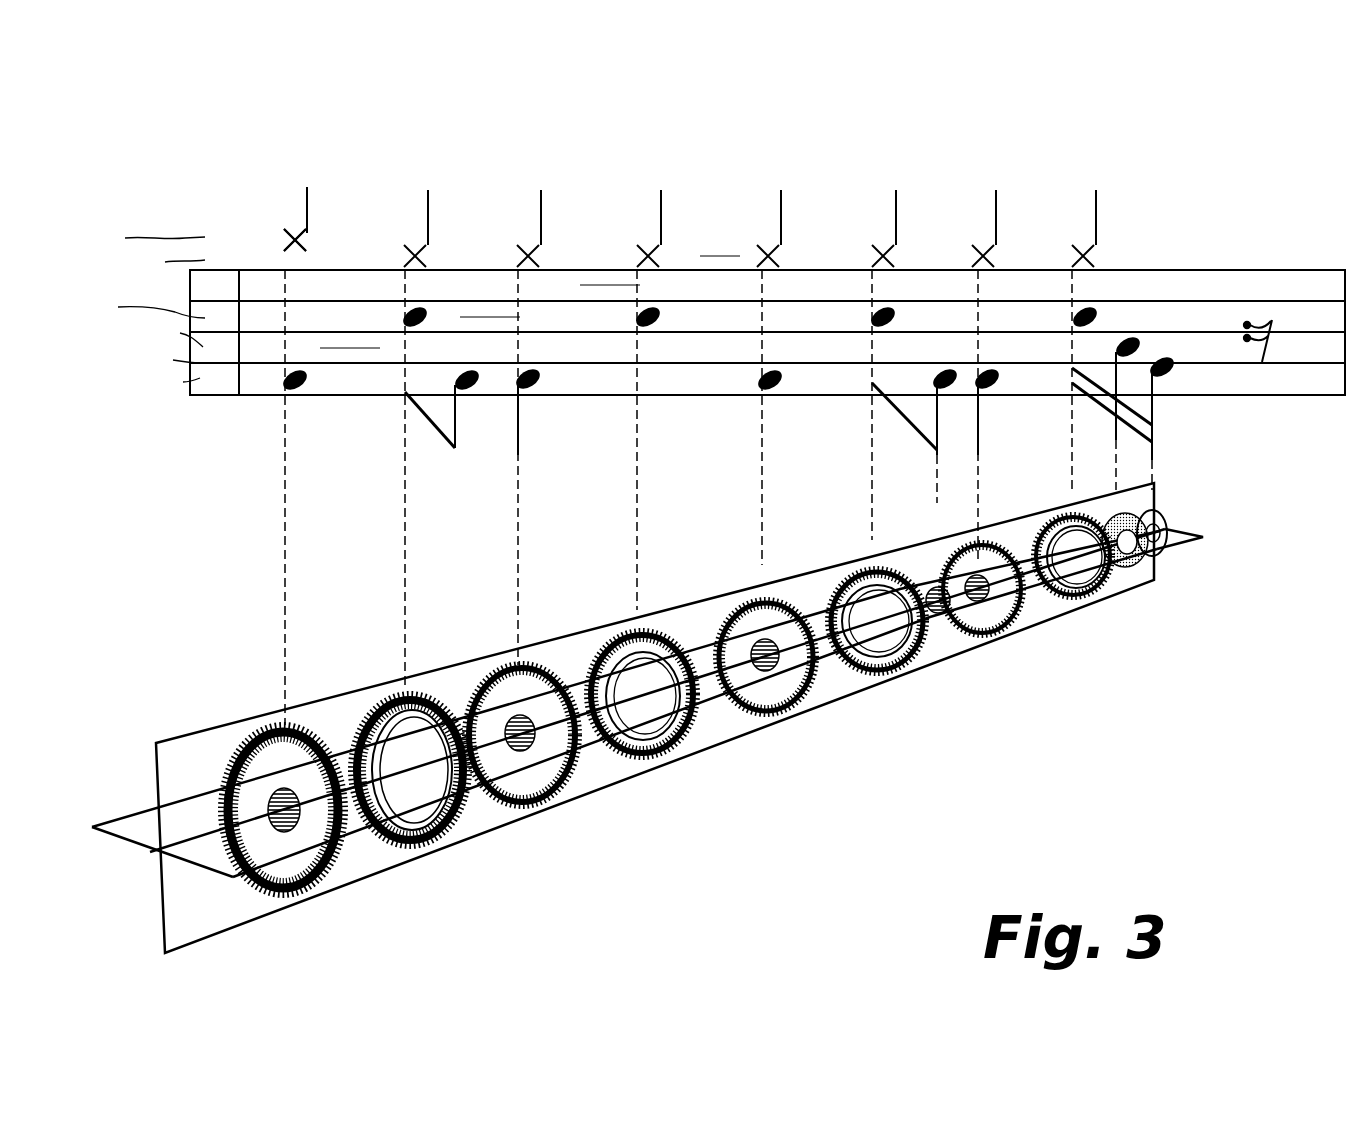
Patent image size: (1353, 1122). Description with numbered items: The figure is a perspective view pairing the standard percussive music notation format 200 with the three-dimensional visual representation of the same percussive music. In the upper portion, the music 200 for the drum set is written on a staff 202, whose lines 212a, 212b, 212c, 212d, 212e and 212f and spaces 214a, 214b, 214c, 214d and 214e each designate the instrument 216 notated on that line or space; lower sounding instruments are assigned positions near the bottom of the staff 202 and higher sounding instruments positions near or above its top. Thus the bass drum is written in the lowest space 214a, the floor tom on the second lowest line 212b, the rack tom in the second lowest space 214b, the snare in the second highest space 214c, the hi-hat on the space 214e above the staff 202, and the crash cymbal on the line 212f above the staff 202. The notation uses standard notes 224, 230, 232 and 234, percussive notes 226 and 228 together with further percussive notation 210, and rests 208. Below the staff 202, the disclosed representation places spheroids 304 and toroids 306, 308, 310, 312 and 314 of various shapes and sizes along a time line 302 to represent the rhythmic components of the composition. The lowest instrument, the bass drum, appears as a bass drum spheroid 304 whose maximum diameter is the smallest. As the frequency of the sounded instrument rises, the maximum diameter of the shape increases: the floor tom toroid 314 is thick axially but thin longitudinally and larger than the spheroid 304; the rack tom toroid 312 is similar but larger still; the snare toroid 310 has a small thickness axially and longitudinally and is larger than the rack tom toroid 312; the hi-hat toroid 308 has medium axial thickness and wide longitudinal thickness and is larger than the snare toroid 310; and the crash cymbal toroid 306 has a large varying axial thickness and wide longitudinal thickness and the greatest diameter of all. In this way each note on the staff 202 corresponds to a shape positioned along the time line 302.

The percussive music notation format 200 is at (1165, 155).
The staff 202 is at (1345, 293).
The rest 208 is at (1262, 320).
The hi-hat note symbols 210 is at (975, 256).
The first staff line 212a is at (260, 395).
The second lowest line 212b is at (308, 363).
The third staff line 212c is at (437, 327).
The fourth staff line 212d is at (553, 300).
The fifth staff line 212e is at (673, 272).
The line above the staff 212f is at (285, 242).
The lowest space 214a is at (578, 382).
The second lowest space 214b is at (340, 347).
The second highest space 214c is at (480, 317).
The fourth staff space 214d is at (598, 283).
The space above the staff 214e is at (717, 252).
The instrument 216 is at (55, 403).
The standard note 224 is at (300, 387).
The percussive note 226 is at (307, 187).
The percussive note 228 is at (781, 192).
The standard note 230 is at (872, 327).
The standard note 232 is at (1128, 347).
The standard note 234 is at (1167, 377).
The time line 302 is at (190, 850).
The bass drum spheroid 304 is at (283, 832).
The crash cymbal toroid 306 is at (250, 736).
The hi-hat toroid 308 is at (385, 695).
The snare toroid 310 is at (412, 828).
The rack tom toroid 312 is at (1123, 563).
The floor tom toroid 314 is at (1177, 537).